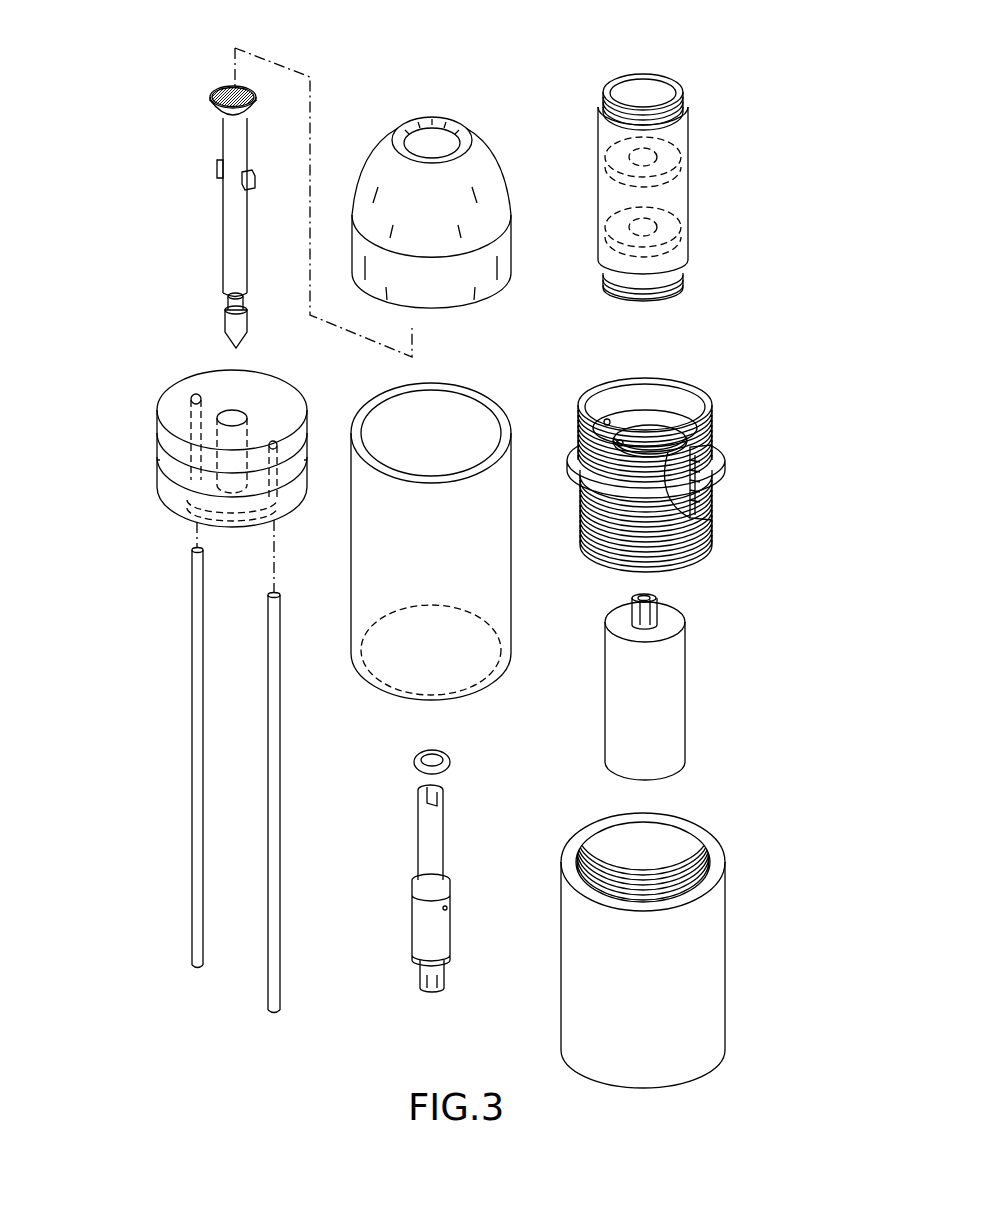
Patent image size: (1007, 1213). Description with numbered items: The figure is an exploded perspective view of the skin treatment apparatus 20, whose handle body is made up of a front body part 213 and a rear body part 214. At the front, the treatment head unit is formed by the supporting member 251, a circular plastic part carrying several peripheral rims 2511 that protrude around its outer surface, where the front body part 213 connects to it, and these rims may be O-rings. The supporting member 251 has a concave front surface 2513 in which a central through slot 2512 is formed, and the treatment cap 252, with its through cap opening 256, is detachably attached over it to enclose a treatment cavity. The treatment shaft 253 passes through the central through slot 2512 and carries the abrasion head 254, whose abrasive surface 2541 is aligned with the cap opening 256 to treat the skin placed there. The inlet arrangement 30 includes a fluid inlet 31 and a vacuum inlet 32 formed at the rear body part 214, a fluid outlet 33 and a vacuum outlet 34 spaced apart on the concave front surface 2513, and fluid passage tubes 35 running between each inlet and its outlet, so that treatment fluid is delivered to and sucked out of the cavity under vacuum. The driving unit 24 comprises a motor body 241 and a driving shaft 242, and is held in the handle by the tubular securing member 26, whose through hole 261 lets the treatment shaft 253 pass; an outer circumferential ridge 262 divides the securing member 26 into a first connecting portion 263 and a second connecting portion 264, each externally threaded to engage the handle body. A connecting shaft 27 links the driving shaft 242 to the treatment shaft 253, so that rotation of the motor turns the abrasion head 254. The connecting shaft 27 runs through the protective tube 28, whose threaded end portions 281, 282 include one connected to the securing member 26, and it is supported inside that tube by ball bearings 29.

The skin treatment apparatus 20 is at (765, 340).
The front body part 213 is at (440, 417).
The rear body part 214 is at (698, 955).
The driving unit 24 is at (727, 728).
The motor body 241 is at (665, 708).
The driving shaft 242 is at (655, 596).
The supporting member 251 is at (168, 446).
The peripheral rims 2511 is at (163, 490).
The central through slot 2512 is at (243, 410).
The concave front surface 2513 is at (203, 393).
The treatment cap 252 is at (462, 192).
The treatment shaft 253 is at (233, 193).
The abrasion head 254 is at (232, 96).
The abrasive surface 2541 is at (226, 78).
The through cap opening 256 is at (428, 140).
The securing member 26 is at (692, 413).
The through hole 261 is at (638, 443).
The outer circumferential ridge 262 is at (710, 473).
The first connecting portion 263 is at (718, 442).
The second connecting portion 264 is at (702, 527).
The connecting shaft 27 is at (433, 885).
The protective tube 28 is at (705, 170).
The end portion 281 is at (687, 98).
The end portion 282 is at (687, 277).
The ball bearings 29 is at (620, 157).
The inlet arrangement 30 is at (213, 350).
The fluid inlet 31 is at (187, 953).
The vacuum inlet 32 is at (285, 1002).
The fluid outlet 33 is at (187, 390).
The vacuum outlet 34 is at (278, 430).
The fluid passage tubes 35 is at (242, 786).